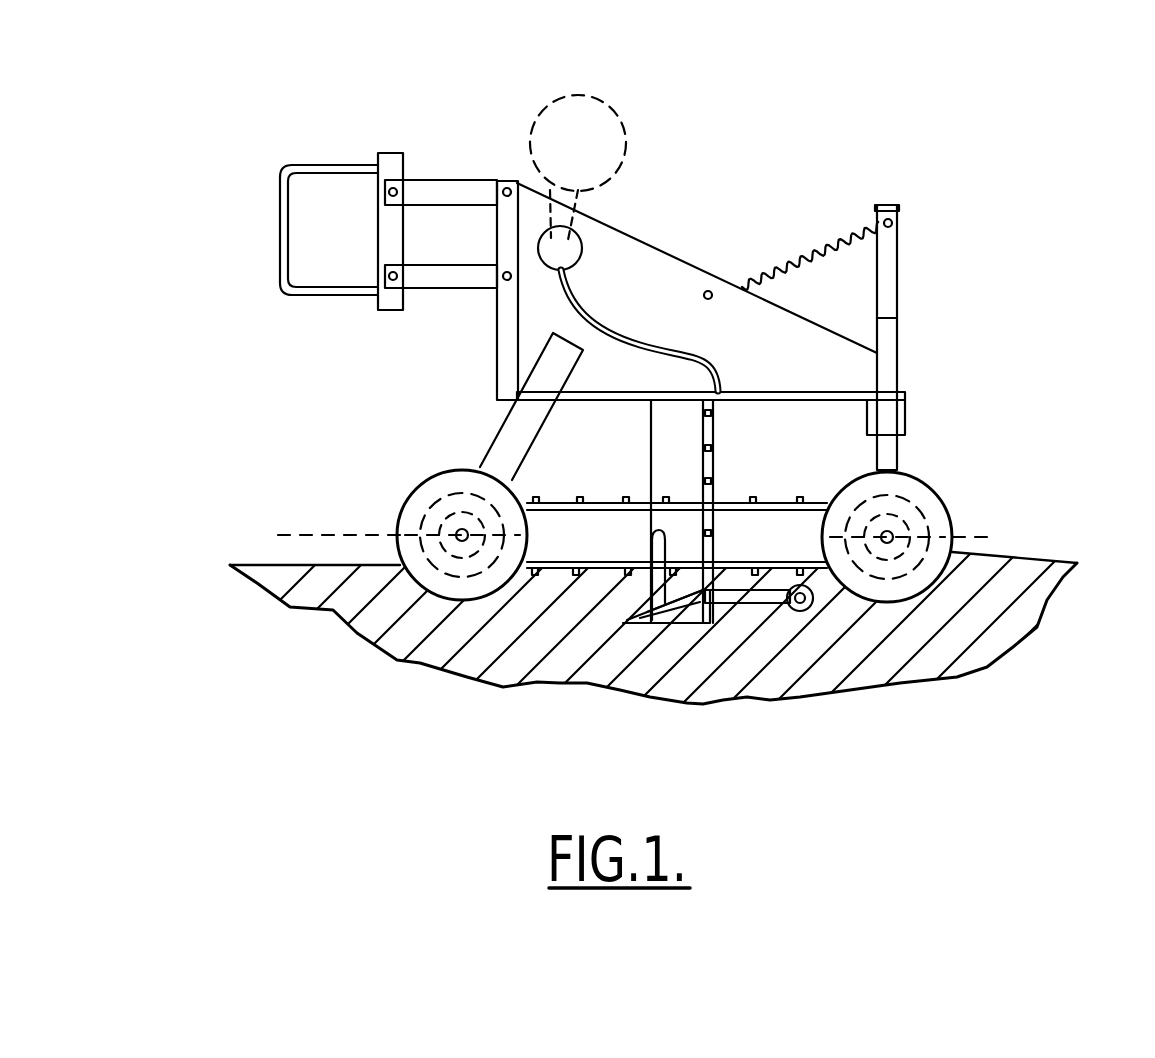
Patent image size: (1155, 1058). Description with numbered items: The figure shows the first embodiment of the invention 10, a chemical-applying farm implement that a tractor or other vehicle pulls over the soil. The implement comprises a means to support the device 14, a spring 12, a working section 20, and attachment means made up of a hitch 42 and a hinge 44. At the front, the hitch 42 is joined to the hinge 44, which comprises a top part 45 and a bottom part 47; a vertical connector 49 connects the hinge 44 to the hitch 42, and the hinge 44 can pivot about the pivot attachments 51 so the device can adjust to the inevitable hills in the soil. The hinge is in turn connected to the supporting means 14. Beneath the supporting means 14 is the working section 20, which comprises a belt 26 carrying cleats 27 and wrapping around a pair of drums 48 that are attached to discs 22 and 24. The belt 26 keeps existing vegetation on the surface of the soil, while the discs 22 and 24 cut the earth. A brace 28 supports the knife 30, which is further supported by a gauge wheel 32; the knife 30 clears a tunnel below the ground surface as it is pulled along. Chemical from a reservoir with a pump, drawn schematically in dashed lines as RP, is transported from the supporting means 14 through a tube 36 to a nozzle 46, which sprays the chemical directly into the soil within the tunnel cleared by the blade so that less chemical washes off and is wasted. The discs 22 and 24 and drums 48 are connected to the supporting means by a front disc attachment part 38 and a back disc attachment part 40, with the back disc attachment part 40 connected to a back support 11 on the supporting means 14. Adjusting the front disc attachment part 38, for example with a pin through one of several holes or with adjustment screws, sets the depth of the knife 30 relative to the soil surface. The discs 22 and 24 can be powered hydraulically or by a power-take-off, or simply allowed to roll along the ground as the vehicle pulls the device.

The first embodiment of the invention 10 is at (897, 140).
The back support 11 is at (888, 325).
The spring 12 is at (772, 267).
The means to support the device 14 is at (663, 213).
The working section 20 is at (1031, 483).
The disc 22 is at (923, 498).
The disc 24 is at (410, 495).
The belt 26 is at (733, 500).
The cleats 27 is at (747, 498).
The brace 28 is at (673, 467).
The knife 30 is at (623, 623).
The gauge wheel 32 is at (810, 605).
The tube 36 is at (713, 413).
The front disc attachment part 38 is at (507, 428).
The back disc attachment part 40 is at (912, 400).
The hitch 42 is at (277, 235).
The hinge 44 is at (463, 164).
The top part 45 is at (433, 197).
The nozzle 46 is at (710, 623).
The bottom part 47 is at (442, 280).
The drums 48 is at (641, 532).
The vertical connector 49 is at (390, 153).
The pivot attachments 51 is at (507, 187).
The reservoir with a pump RP is at (578, 182).